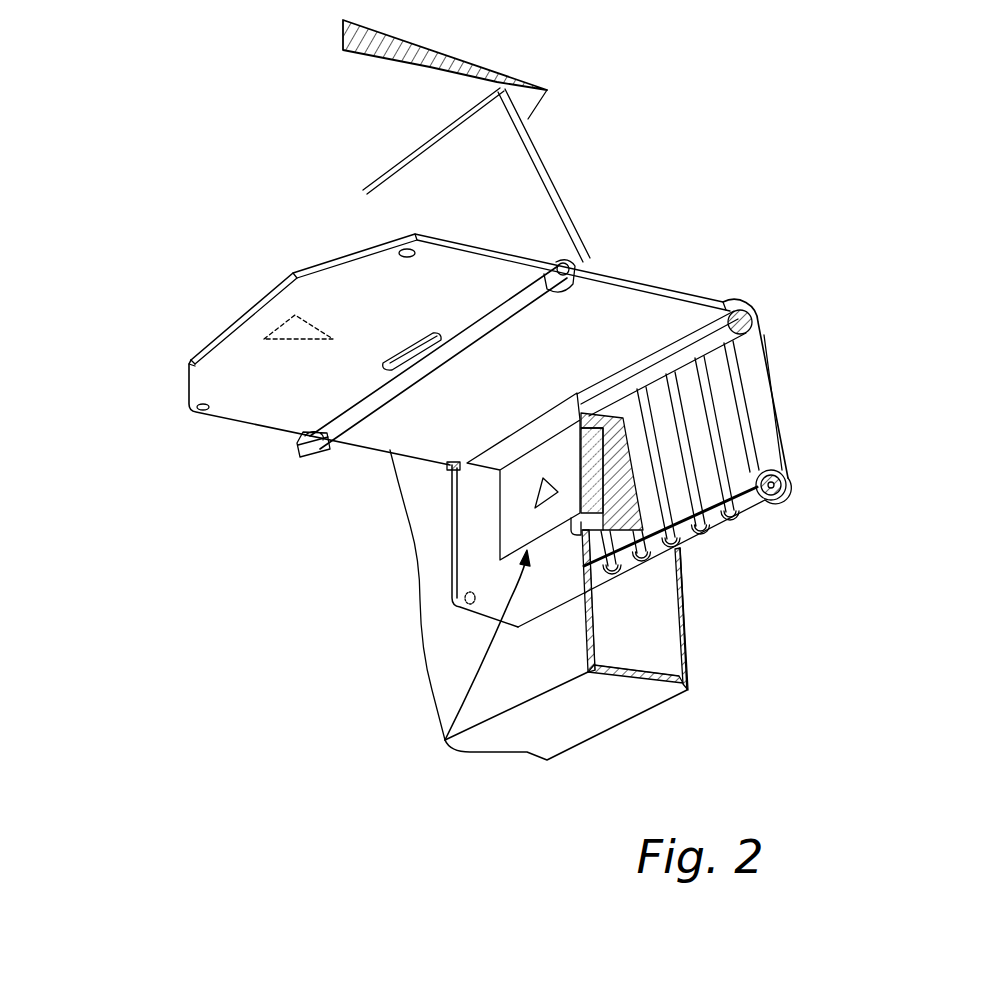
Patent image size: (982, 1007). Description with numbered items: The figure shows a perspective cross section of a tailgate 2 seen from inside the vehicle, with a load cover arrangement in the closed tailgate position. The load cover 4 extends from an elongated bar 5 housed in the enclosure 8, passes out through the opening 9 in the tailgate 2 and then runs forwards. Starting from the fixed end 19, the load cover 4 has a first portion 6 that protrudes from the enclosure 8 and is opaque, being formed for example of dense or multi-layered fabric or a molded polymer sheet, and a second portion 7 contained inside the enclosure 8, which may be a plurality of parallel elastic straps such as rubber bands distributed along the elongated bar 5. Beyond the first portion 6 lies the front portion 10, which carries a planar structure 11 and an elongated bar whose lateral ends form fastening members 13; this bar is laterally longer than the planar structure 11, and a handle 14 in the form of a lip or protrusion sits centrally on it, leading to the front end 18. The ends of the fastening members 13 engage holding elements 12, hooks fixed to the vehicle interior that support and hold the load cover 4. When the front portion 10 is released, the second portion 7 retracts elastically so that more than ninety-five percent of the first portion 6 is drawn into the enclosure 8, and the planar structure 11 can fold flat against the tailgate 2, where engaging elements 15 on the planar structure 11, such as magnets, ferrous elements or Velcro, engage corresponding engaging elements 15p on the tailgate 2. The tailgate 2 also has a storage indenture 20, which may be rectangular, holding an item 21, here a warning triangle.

The tailgate 2 is at (583, 720).
The load cover 4 is at (708, 272).
The elongated bar 5 is at (786, 484).
The first portion 6 is at (613, 290).
The second portion 7 is at (763, 413).
The enclosure 8 is at (662, 639).
The opening 9 is at (452, 466).
The front portion 10 is at (455, 208).
The planar structure 11 is at (220, 355).
The holding elements 12 is at (578, 264).
The fastening members 13 is at (304, 436).
The handle 14 is at (405, 348).
The engaging elements 15 is at (203, 413).
The engaging elements 15p is at (465, 602).
The front end 18 is at (246, 310).
The fixed end 19 is at (693, 535).
The indenture 20 is at (445, 740).
The item 21 is at (523, 503).